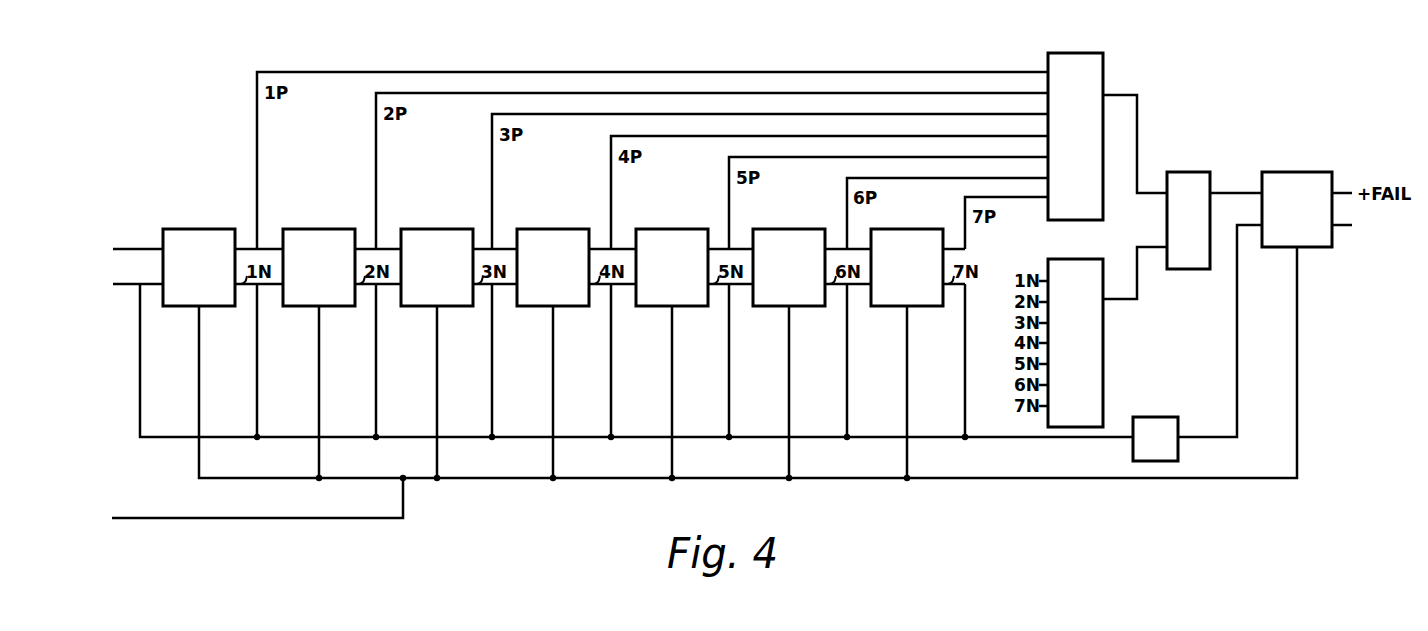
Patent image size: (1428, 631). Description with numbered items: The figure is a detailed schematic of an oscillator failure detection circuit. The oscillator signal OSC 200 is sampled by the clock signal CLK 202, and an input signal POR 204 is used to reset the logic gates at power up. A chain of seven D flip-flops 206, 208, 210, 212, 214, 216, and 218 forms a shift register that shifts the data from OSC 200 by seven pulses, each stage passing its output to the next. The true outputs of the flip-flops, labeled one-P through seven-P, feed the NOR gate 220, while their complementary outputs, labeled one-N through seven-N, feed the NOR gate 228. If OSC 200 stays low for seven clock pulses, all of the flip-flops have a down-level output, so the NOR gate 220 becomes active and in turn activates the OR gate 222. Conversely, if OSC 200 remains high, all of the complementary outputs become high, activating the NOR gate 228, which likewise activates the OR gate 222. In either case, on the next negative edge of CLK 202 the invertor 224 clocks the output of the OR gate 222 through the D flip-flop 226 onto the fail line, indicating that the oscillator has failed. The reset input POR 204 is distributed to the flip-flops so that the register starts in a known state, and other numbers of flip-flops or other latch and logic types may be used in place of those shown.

The oscillator signal OSC 200 is at (117, 217).
The clock signal CLK 202 is at (78, 305).
The input signal POR 204 is at (80, 507).
The D flip-flop 206 is at (199, 229).
The D flip-flop 208 is at (319, 229).
The D flip-flop 210 is at (437, 229).
The D flip-flop 212 is at (553, 229).
The D flip-flop 214 is at (666, 229).
The D flip-flop 216 is at (785, 229).
The D flip-flop 218 is at (905, 229).
The NOR gate 220 is at (1103, 62).
The OR gate 222 is at (1181, 172).
The invertor 224 is at (1160, 417).
The D flip-flop 226 is at (1286, 172).
The NOR gate 228 is at (1104, 334).